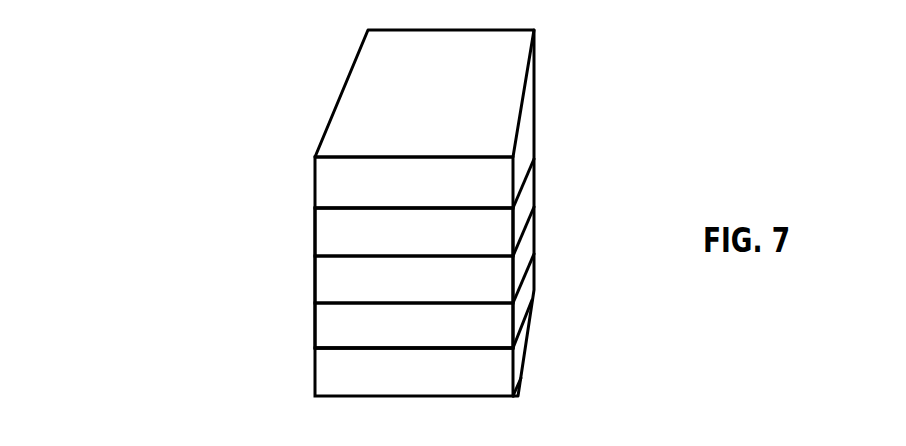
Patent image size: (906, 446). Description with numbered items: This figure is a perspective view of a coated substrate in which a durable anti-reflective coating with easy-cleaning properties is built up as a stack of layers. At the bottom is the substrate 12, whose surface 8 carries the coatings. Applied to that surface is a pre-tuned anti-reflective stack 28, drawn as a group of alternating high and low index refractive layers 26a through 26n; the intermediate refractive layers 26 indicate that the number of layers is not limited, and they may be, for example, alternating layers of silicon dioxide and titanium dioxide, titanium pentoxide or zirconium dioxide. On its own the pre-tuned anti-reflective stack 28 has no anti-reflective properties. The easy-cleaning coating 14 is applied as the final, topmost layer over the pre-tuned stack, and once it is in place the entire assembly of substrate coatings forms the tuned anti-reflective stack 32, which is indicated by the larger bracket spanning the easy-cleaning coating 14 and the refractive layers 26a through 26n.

The tuned anti-reflective stack 32 is at (140, 145).
The pre-tuned anti-reflective stack 28 is at (202, 210).
The easy-cleaning coating 14 is at (320, 183).
The refractive layer 26a is at (316, 230).
The refractive layers 26 is at (316, 285).
The refractive layer 26n is at (316, 330).
The substrate 12 is at (316, 373).
The surface 8 is at (377, 347).